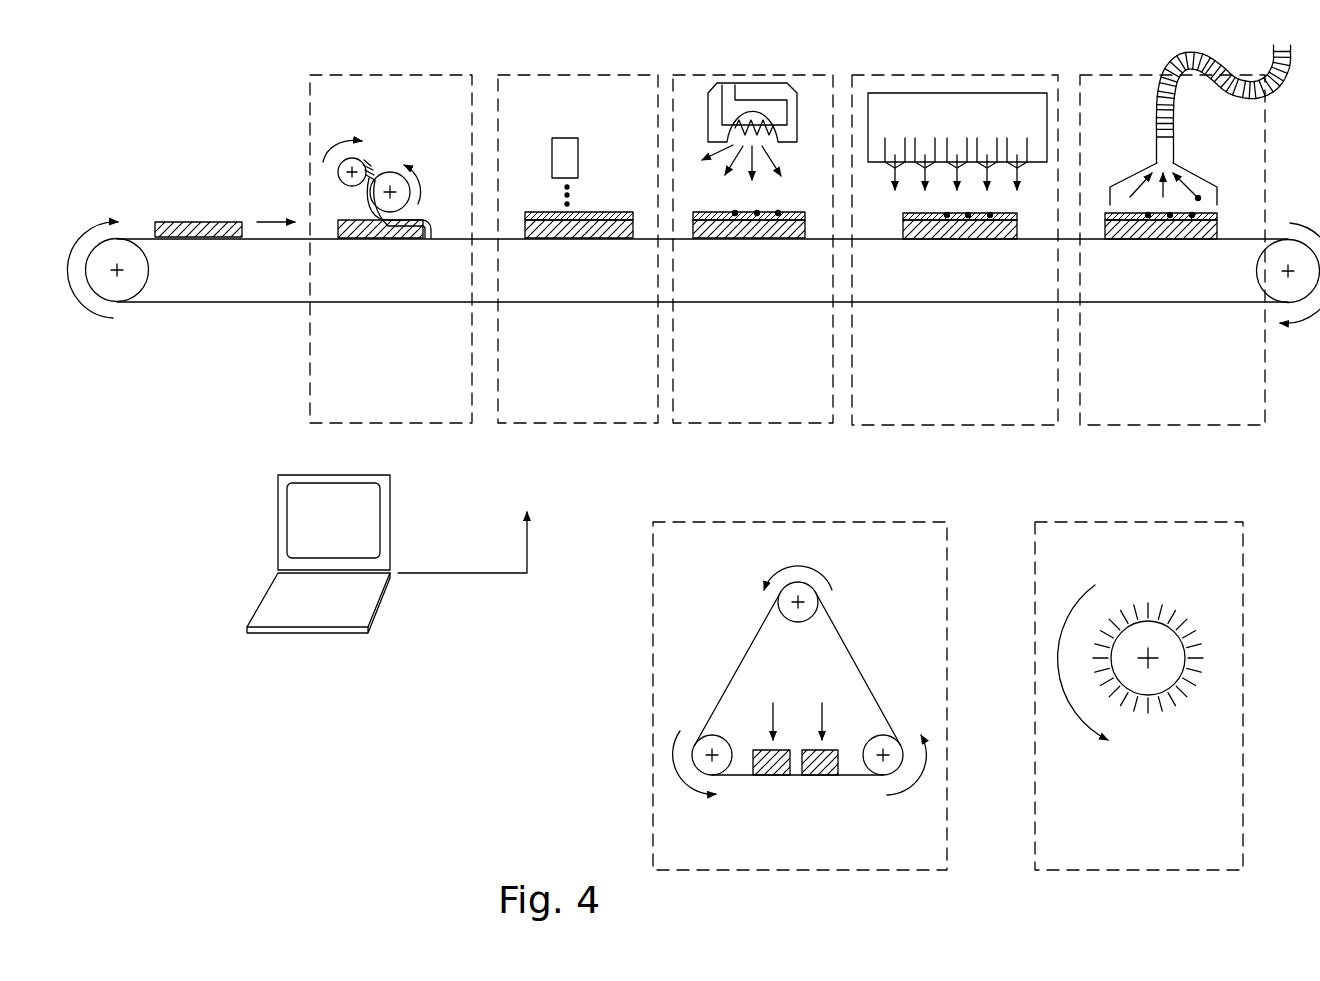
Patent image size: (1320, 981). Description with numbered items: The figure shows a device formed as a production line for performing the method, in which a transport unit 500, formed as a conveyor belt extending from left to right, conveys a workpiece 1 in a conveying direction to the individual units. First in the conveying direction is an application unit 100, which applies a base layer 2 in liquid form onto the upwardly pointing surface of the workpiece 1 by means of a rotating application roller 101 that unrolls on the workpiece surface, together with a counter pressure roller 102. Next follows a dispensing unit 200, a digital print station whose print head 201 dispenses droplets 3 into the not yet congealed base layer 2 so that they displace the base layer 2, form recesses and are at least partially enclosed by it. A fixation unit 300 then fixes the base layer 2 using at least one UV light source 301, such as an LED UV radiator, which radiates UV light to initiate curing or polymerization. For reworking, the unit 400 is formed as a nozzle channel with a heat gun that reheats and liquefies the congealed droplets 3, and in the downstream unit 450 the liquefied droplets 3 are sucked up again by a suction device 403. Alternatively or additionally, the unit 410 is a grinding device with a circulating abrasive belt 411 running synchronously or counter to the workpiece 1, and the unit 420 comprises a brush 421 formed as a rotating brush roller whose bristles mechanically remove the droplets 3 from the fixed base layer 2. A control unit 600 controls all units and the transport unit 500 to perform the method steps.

The workpiece 1 is at (178, 224).
The base layer 2 is at (428, 241).
The droplets 3 is at (990, 214).
The application unit 100 is at (365, 407).
The application roller 101 is at (393, 172).
The counter pressure roller 102 is at (312, 172).
The dispensing unit 200 is at (554, 407).
The dispenser 201 is at (563, 138).
The fixation unit 300 is at (744, 407).
The UV light source 301 is at (791, 106).
The unit 400 is at (934, 407).
The suction device 403 is at (1137, 167).
The unit 410 is at (774, 854).
The abrasive belt 411 is at (862, 675).
The unit 420 is at (1119, 854).
The brush 421 is at (1153, 620).
The unit 450 is at (1132, 407).
The transport unit 500 is at (234, 303).
The control unit 600 is at (278, 517).